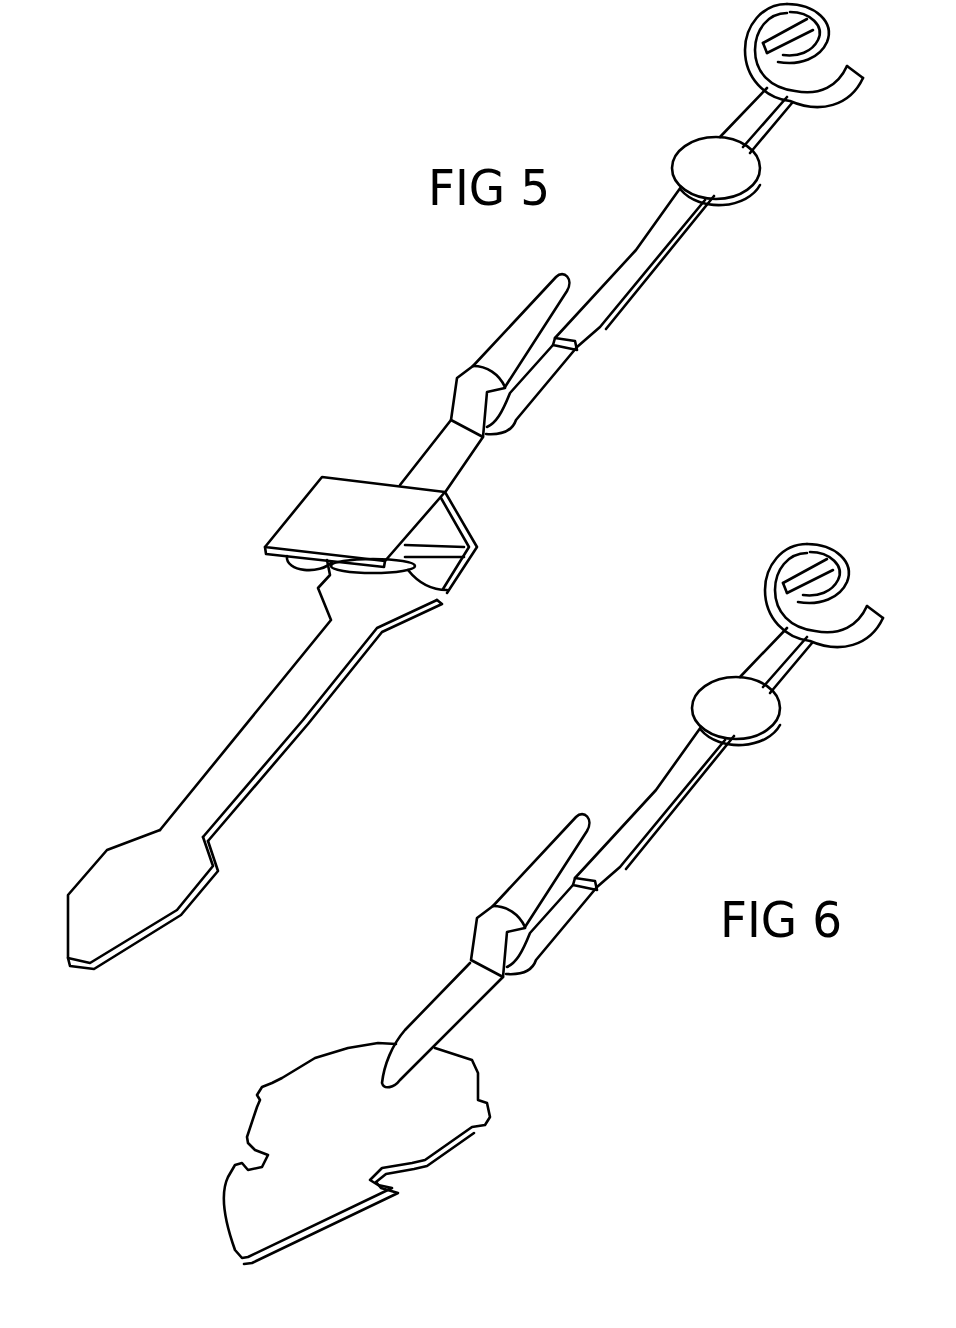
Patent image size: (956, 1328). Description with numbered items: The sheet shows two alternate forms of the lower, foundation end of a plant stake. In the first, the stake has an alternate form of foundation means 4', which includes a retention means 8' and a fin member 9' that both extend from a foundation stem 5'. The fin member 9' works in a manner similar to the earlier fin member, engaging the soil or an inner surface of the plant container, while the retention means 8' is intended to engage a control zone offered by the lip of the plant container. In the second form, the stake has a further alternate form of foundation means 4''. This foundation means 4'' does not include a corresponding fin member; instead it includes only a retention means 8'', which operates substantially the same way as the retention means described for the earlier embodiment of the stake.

In FIG. 5, the foundation means 4' is at (301, 700).
In FIG. 5, the foundation stem 5' is at (591, 247).
In FIG. 5, the retention means 8' is at (405, 550).
In FIG. 5, the fin member 9' is at (138, 860).
In FIG. 6, the foundation means 4'' is at (632, 815).
In FIG. 6, the retention means 8'' is at (315, 1153).